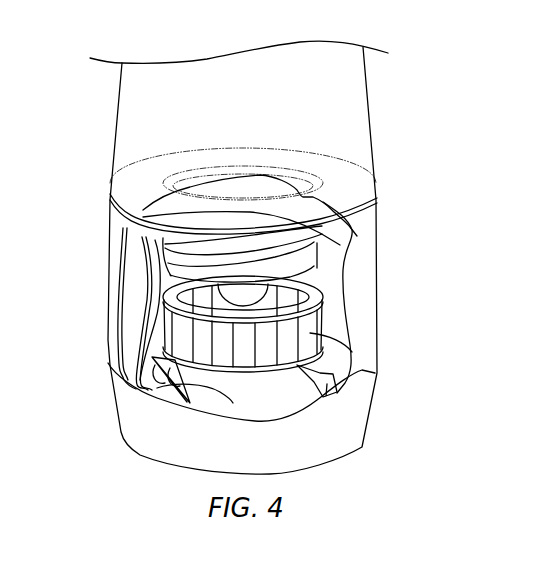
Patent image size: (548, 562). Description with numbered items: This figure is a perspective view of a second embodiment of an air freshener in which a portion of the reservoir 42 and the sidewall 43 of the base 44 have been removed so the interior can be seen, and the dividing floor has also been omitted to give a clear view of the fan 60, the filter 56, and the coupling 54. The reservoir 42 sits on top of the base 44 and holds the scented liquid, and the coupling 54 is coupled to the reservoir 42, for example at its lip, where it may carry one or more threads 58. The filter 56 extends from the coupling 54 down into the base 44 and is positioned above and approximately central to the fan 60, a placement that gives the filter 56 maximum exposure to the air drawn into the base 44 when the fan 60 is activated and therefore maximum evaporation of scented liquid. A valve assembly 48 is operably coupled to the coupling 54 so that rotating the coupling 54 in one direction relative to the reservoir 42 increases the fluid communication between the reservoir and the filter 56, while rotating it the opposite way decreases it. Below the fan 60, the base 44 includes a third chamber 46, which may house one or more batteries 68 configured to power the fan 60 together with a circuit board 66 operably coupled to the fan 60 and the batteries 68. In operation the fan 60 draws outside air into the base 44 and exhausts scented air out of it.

The reservoir 42 is at (362, 125).
The sidewall 43 is at (366, 330).
The base 44 is at (389, 315).
The third chamber 46 is at (360, 412).
The valve assembly 48 is at (242, 200).
The coupling 54 is at (178, 233).
The filter 56 is at (242, 297).
The threads 58 is at (323, 228).
The fan 60 is at (376, 373).
The circuit board 66 is at (175, 382).
The batteries 68 is at (268, 330).